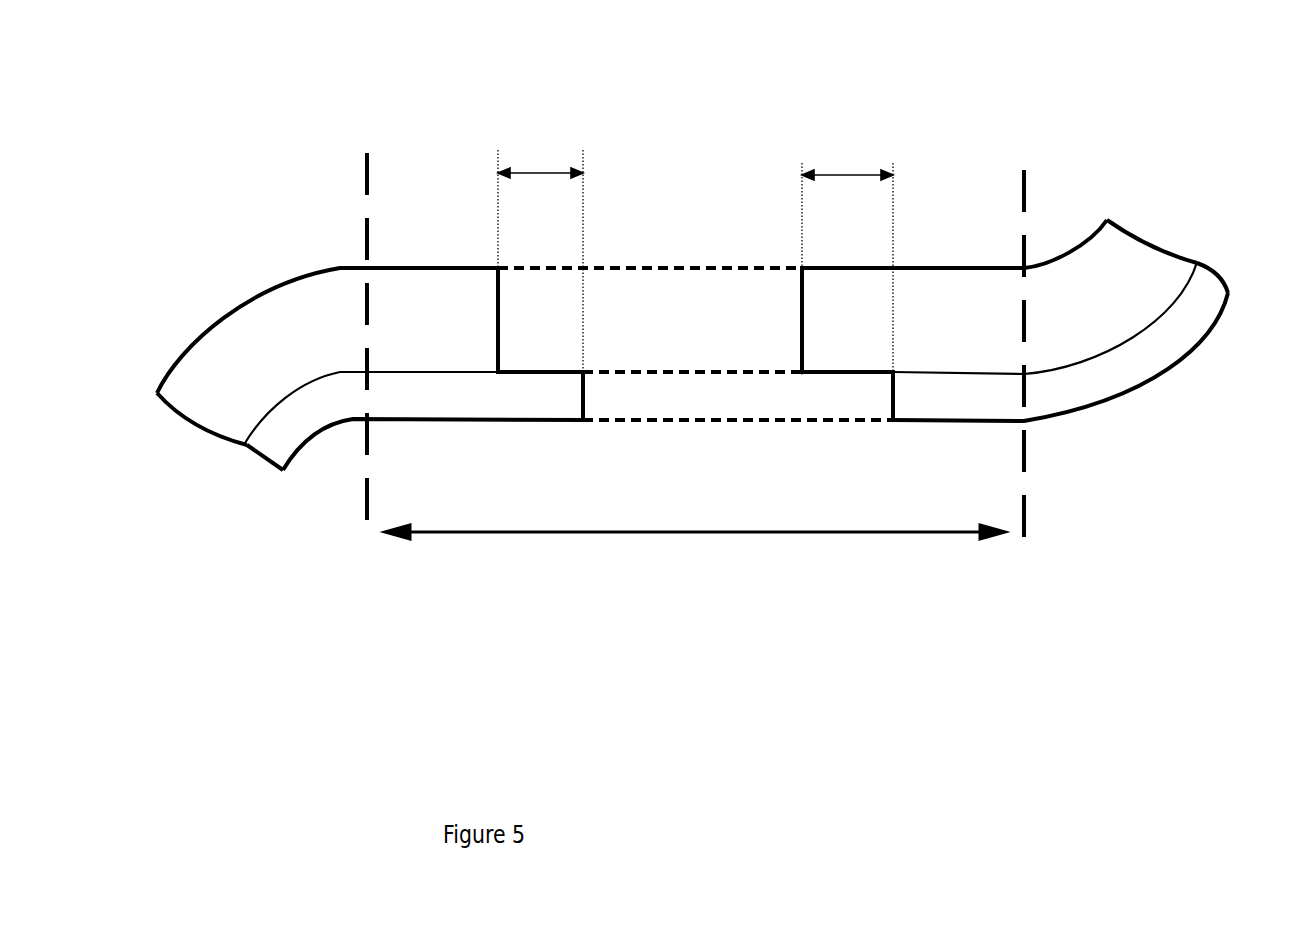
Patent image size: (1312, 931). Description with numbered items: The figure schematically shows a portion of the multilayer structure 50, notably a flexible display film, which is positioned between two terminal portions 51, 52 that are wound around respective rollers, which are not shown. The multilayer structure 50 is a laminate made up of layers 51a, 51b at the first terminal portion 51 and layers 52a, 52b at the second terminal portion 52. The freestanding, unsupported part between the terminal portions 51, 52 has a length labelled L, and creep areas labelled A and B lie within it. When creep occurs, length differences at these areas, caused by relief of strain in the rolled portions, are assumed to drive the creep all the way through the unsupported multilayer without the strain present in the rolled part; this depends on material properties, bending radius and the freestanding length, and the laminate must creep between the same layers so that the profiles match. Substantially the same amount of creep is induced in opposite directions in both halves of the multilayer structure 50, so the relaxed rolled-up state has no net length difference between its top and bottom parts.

The multilayer structure 50 is at (368, 58).
The terminal portion 51 is at (349, 370).
The layer 51a is at (203, 420).
The layer 51b is at (272, 448).
The terminal portion 52 is at (1047, 354).
The layer 52a is at (1122, 257).
The layer 52b is at (1202, 307).